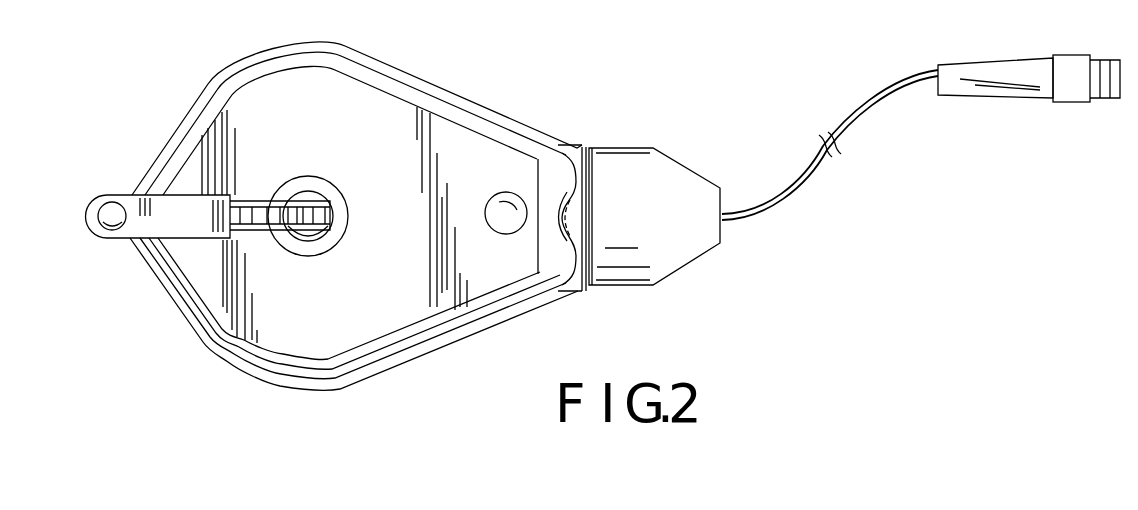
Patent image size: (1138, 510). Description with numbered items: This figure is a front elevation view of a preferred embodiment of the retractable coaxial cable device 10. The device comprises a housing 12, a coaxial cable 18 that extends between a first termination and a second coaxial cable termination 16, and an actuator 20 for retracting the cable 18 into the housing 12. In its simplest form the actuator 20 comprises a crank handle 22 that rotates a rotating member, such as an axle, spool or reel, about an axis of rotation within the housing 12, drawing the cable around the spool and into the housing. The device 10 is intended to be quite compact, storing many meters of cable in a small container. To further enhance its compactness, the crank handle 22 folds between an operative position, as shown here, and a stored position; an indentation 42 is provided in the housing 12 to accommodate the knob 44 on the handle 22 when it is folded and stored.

The retractable coaxial cable device 10 is at (491, 75).
The housing 12 is at (389, 318).
The second coaxial cable termination 16 is at (1065, 58).
The coaxial cable 18 is at (808, 190).
The actuator 20 is at (306, 200).
The crank handle 22 is at (178, 228).
The indentation 42 is at (507, 226).
The knob 44 is at (112, 208).